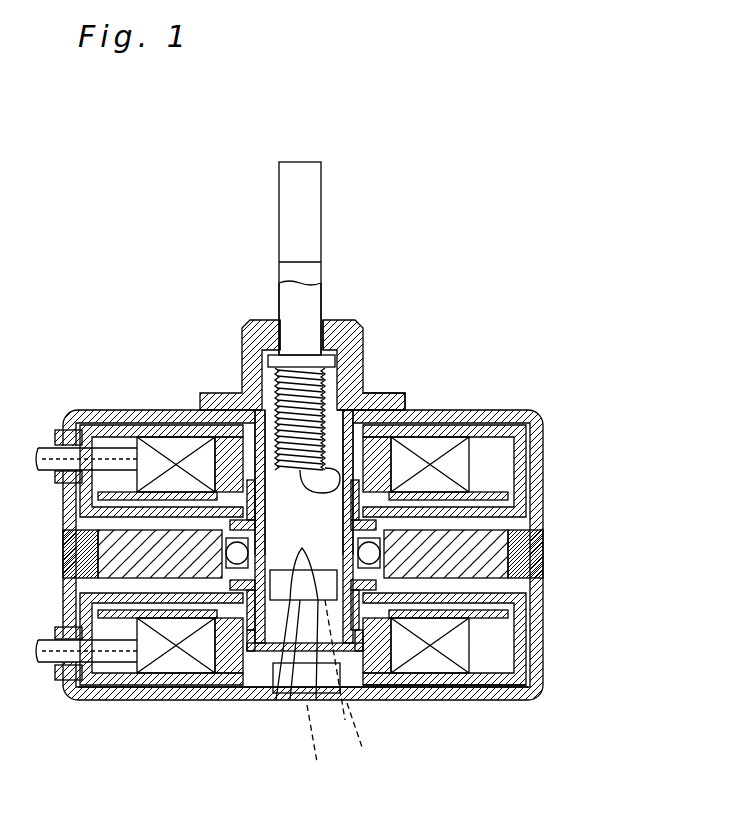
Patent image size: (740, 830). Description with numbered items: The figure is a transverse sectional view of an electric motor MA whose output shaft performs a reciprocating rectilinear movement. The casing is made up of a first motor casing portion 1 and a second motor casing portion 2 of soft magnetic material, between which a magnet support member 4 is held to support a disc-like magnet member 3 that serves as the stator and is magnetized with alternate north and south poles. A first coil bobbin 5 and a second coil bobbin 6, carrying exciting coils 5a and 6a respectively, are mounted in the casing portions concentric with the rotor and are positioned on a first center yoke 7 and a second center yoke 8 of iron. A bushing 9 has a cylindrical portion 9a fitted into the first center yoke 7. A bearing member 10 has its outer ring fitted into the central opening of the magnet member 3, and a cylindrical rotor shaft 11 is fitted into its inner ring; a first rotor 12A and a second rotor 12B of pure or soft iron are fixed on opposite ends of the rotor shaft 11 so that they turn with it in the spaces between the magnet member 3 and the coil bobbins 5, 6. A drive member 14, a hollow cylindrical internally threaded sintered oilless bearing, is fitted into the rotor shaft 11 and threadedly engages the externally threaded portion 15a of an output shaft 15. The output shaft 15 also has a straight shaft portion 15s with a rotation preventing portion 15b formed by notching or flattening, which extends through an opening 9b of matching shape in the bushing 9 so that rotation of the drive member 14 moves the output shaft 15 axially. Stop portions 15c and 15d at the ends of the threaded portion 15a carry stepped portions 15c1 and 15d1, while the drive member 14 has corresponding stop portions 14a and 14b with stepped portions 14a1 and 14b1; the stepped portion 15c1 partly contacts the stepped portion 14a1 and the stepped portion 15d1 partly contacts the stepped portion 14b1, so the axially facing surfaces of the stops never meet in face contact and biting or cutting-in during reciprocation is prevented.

The electric motor MA is at (493, 222).
The first motor casing portion 1 is at (80, 413).
The second motor casing portion 2 is at (95, 703).
The magnet member 3 is at (545, 534).
The magnet support member 4 is at (545, 553).
The first coil bobbin 5 is at (185, 440).
The exciting coil 5a is at (155, 432).
The second coil bobbin 6 is at (213, 703).
The exciting coil 6a is at (170, 660).
The first center yoke 7 is at (372, 490).
The second center yoke 8 is at (453, 703).
The bushing 9 is at (345, 332).
The cylindrical portion of bushing 9a is at (372, 400).
The opening of bushing 9b is at (330, 335).
The bearing member 10 is at (450, 620).
The rotor shaft 11 is at (420, 672).
The first rotor 12A is at (545, 462).
The second rotor 12B is at (545, 635).
The drive member 14 is at (495, 488).
The stop portion of drive member 14a is at (268, 458).
The stepped portion of stop portion 14a 14a1 is at (385, 475).
The stop portion of drive member 14b is at (363, 697).
The stepped portion of stop portion 14b 14b1 is at (265, 700).
The output shaft 15 is at (283, 280).
The externally threaded portion 15a is at (298, 410).
The rotation preventing portion 15b is at (322, 312).
The stop portion 15c is at (288, 355).
The stepped portion of stop portion 15c 15c1 is at (352, 380).
The stop portion 15d is at (333, 700).
The stepped portion of stop portion 15d 15d1 is at (290, 690).
The straight shaft portion 15s is at (318, 275).